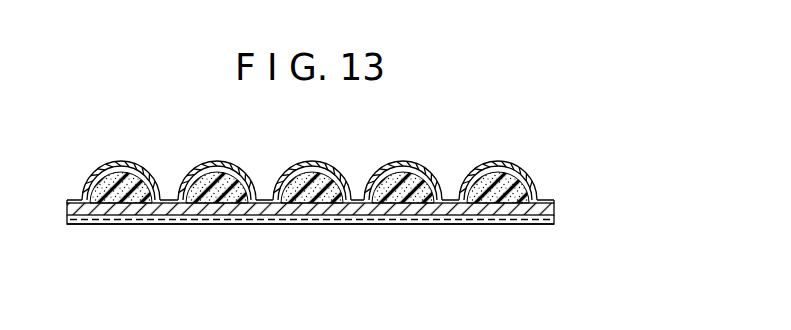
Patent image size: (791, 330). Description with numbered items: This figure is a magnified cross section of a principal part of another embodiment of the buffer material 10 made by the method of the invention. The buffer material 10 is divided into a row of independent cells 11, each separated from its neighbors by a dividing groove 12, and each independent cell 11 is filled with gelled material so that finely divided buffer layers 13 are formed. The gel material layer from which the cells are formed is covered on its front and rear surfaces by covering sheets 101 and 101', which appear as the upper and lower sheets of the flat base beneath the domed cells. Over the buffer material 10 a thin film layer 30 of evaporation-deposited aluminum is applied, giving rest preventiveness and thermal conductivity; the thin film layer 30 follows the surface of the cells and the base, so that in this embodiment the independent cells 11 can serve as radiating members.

The buffer material 10 is at (564, 217).
The independent cell 11 is at (488, 163).
The dividing groove 12 is at (451, 200).
The finely divided buffer layer 13 is at (486, 225).
The thin film layer 30 is at (522, 172).
The covering sheet 101 is at (229, 157).
The covering sheet 101' is at (310, 254).